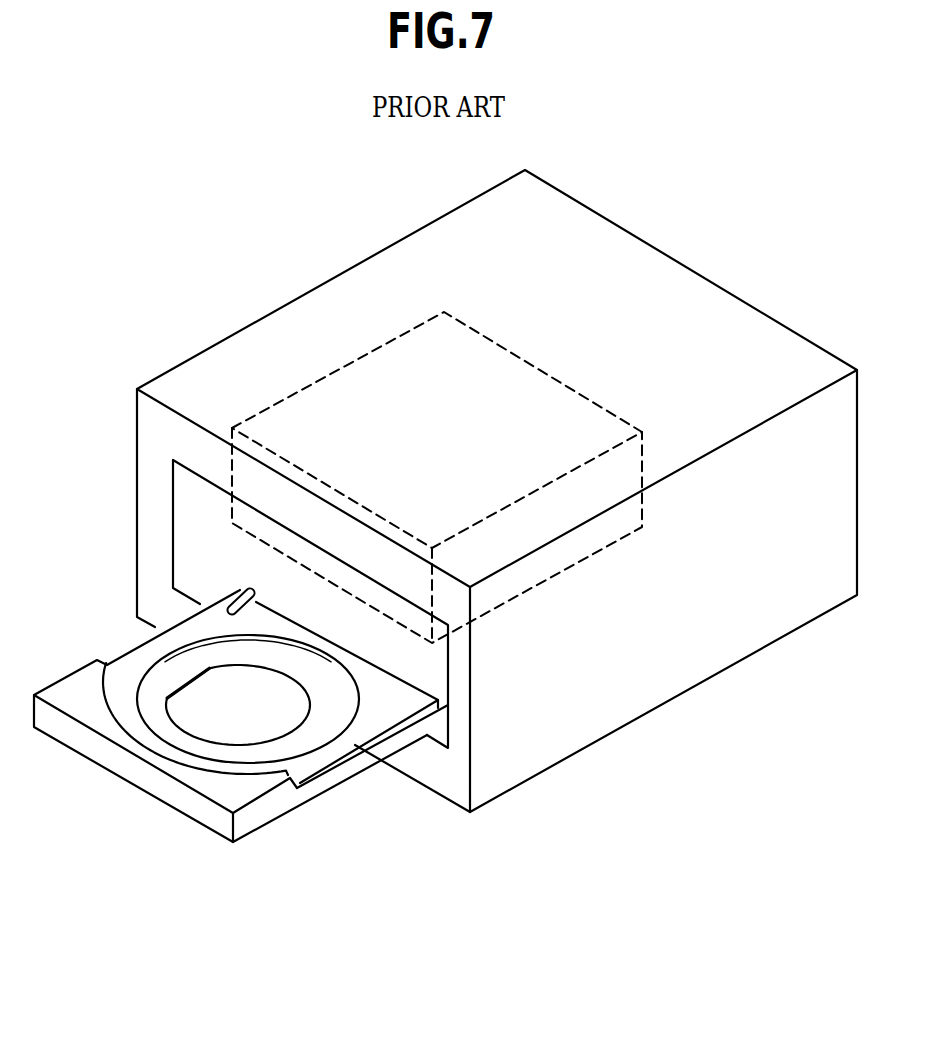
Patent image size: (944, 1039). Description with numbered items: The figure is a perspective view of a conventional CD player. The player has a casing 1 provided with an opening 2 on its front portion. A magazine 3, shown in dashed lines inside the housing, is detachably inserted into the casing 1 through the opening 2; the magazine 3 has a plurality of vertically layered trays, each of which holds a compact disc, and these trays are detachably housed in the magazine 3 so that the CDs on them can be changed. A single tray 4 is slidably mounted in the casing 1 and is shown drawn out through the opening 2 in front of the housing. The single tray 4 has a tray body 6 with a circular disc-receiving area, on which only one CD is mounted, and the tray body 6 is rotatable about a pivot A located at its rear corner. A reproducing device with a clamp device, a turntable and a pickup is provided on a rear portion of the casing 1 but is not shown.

The casing 1 is at (327, 259).
The opening 2 is at (183, 498).
The magazine 3 is at (495, 367).
The single tray 4 is at (170, 822).
The tray body 6 is at (363, 722).
The pivot A is at (246, 592).